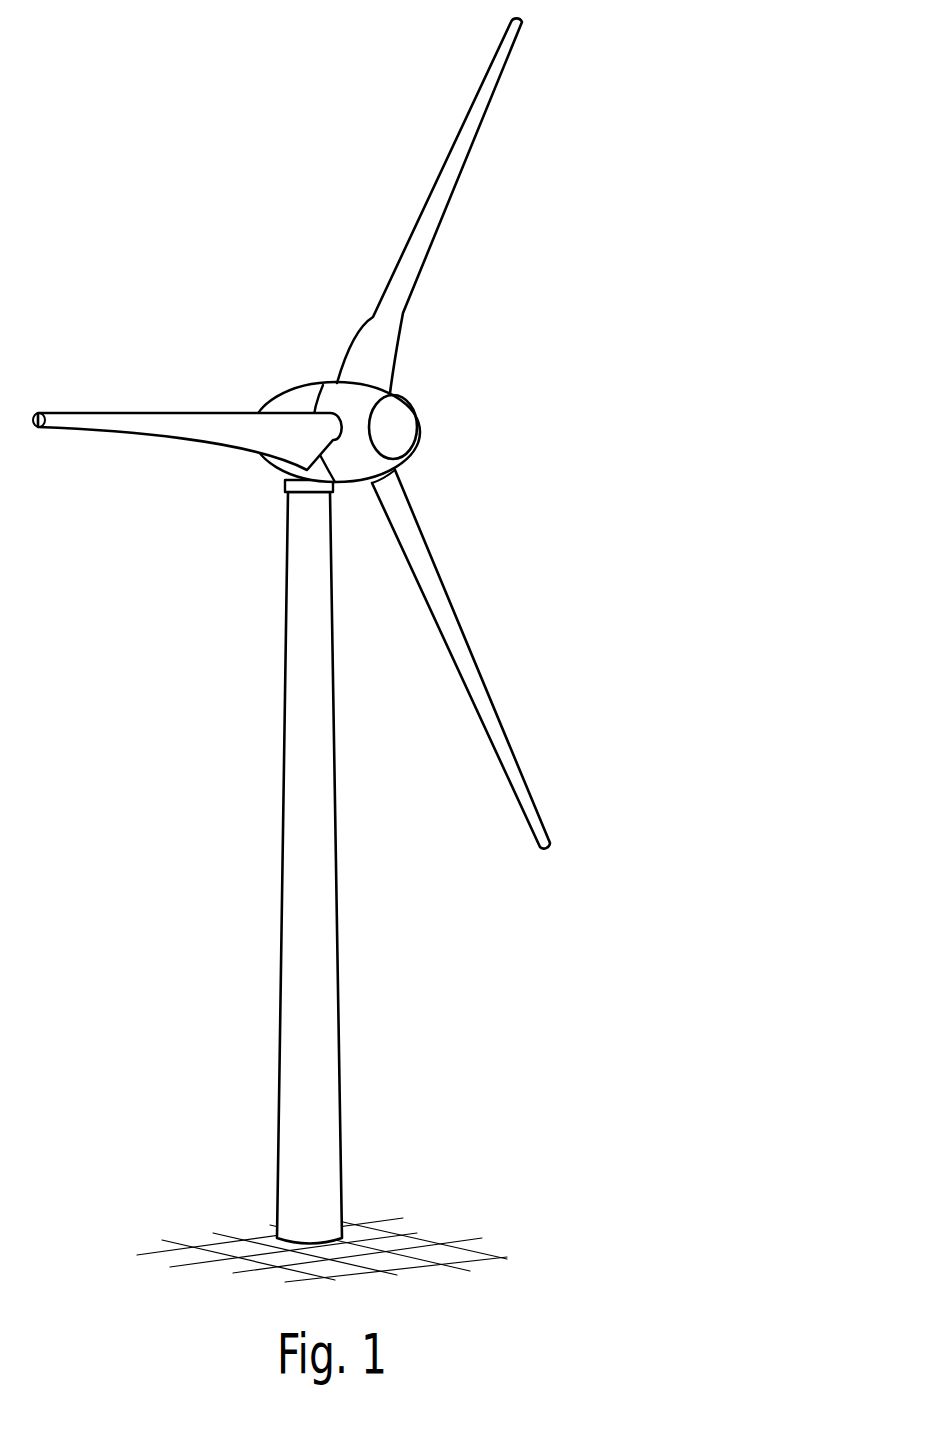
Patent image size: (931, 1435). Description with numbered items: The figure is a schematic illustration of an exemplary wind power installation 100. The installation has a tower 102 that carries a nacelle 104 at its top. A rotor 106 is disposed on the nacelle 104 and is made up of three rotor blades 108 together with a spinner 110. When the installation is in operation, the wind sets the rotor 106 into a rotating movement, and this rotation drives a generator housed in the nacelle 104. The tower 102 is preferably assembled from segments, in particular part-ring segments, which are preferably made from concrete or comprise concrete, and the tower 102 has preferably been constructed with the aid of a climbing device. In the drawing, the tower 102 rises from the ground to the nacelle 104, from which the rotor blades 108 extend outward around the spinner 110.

The wind power installation 100 is at (348, 650).
The tower 102 is at (330, 963).
The nacelle 104 is at (293, 398).
The rotor 106 is at (348, 433).
The rotor blades 108 is at (440, 200).
The spinner 110 is at (400, 427).